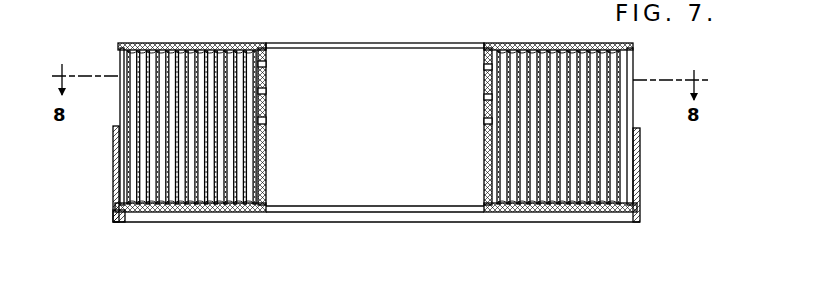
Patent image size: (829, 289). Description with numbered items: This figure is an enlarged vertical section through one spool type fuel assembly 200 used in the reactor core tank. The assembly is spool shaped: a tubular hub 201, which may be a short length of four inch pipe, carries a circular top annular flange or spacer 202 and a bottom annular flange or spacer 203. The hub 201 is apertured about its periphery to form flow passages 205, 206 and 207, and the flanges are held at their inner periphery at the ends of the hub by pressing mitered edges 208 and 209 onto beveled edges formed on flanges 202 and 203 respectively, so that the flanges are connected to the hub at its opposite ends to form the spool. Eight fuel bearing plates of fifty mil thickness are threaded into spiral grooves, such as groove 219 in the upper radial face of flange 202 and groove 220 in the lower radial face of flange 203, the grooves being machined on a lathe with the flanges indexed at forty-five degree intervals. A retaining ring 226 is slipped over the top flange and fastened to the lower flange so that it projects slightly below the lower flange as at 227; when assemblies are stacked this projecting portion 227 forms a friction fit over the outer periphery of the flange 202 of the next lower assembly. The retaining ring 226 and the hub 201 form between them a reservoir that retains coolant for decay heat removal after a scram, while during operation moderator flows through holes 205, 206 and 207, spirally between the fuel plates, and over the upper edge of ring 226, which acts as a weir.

The fuel assembly 200 is at (228, 39).
The tubular hub 201 is at (268, 155).
The top annular flange 202 is at (151, 42).
The bottom annular flange 203 is at (200, 208).
The flow passage 205 is at (268, 122).
The flow passage 206 is at (268, 93).
The flow passage 207 is at (268, 66).
The mitered edge 208 is at (488, 43).
The mitered edge 209 is at (485, 206).
The spiral groove 219 is at (546, 49).
The spiral groove 220 is at (241, 209).
The retaining ring 226 is at (112, 177).
The projecting portion of retaining ring 227 is at (121, 215).